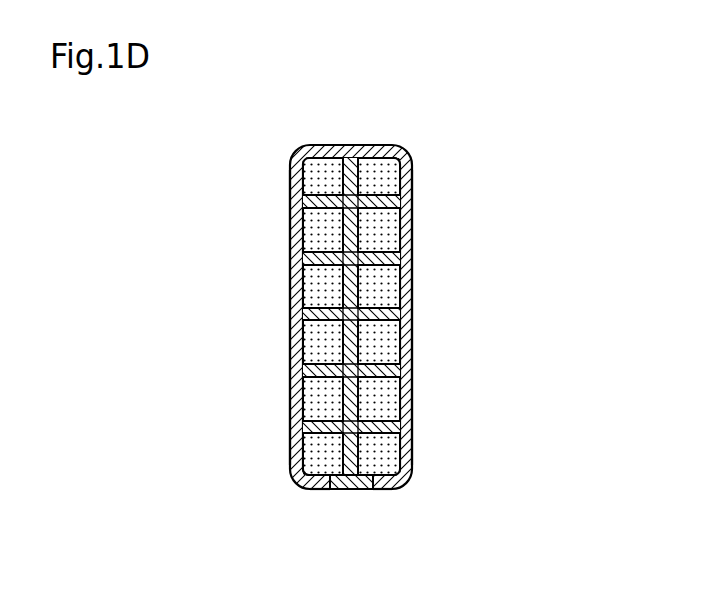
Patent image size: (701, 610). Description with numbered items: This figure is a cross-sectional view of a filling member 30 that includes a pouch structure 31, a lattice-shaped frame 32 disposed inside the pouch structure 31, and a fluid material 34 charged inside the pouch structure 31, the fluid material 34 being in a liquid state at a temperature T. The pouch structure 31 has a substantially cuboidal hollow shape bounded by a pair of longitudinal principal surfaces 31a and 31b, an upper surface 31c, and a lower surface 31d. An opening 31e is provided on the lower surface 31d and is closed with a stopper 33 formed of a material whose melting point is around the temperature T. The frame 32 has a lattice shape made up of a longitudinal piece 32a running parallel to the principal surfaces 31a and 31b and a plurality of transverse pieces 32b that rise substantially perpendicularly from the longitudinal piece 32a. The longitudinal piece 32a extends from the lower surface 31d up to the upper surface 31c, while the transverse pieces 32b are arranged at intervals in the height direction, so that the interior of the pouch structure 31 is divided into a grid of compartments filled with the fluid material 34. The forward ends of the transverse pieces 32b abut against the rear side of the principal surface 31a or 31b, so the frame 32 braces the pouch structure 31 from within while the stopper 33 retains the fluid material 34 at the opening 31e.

The filling member 30 is at (376, 319).
The pouch structure 31 is at (286, 191).
The principal surface 31a is at (412, 287).
The principal surface 31b is at (291, 291).
The upper surface 31c is at (321, 145).
The lower surface 31d is at (383, 490).
The opening 31e is at (310, 489).
The lattice-shaped frame 32 is at (347, 288).
The longitudinal piece 32a is at (345, 164).
The transverse pieces 32b is at (383, 196).
The stopper 33 is at (348, 489).
The fluid material 34 is at (318, 280).